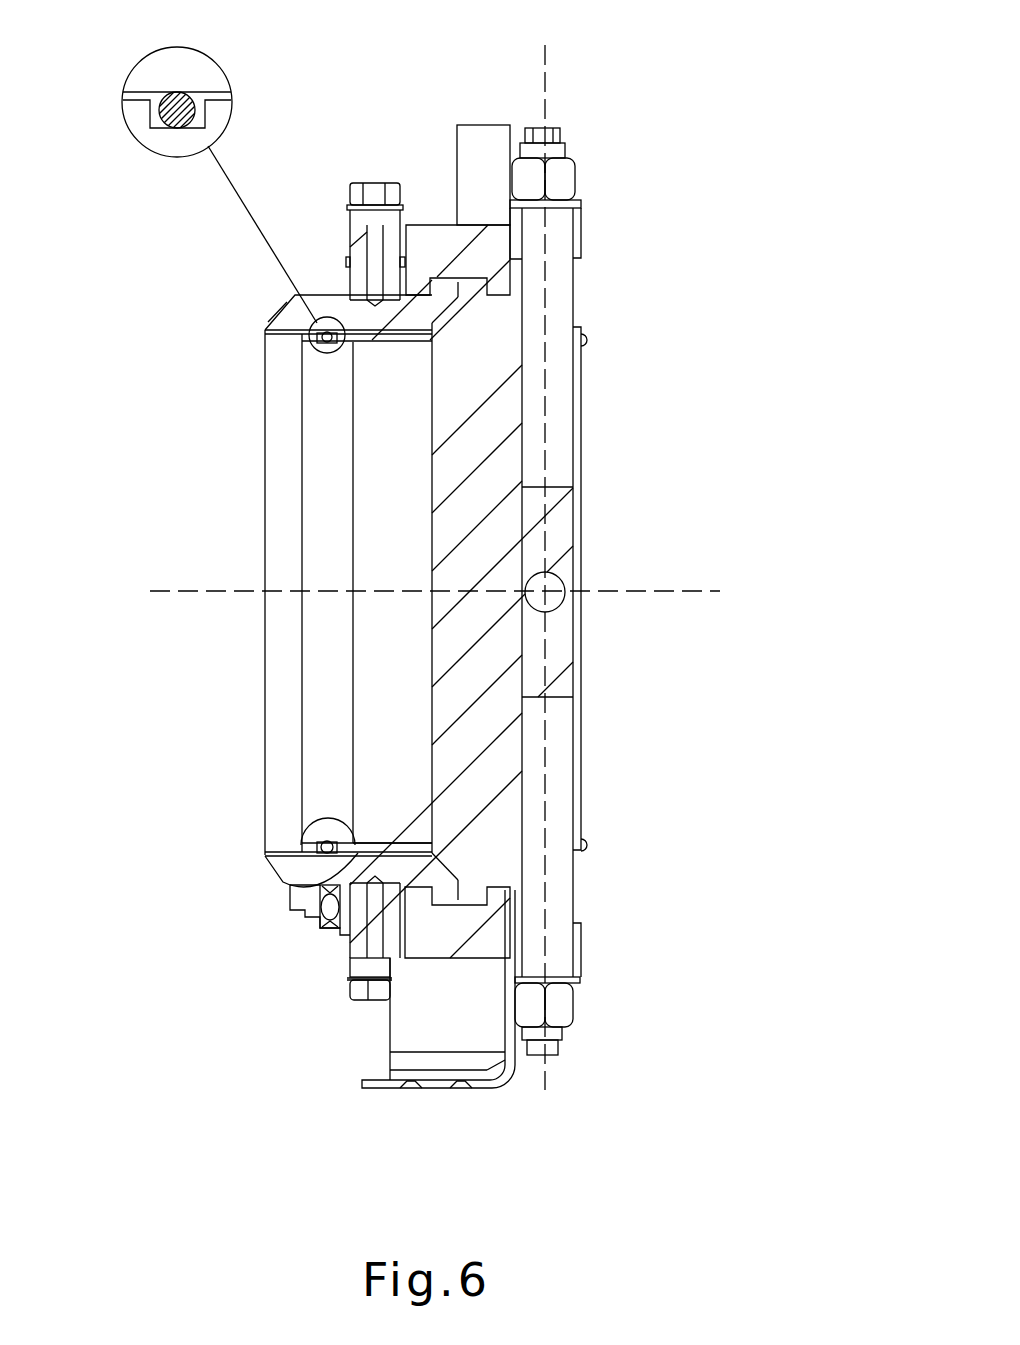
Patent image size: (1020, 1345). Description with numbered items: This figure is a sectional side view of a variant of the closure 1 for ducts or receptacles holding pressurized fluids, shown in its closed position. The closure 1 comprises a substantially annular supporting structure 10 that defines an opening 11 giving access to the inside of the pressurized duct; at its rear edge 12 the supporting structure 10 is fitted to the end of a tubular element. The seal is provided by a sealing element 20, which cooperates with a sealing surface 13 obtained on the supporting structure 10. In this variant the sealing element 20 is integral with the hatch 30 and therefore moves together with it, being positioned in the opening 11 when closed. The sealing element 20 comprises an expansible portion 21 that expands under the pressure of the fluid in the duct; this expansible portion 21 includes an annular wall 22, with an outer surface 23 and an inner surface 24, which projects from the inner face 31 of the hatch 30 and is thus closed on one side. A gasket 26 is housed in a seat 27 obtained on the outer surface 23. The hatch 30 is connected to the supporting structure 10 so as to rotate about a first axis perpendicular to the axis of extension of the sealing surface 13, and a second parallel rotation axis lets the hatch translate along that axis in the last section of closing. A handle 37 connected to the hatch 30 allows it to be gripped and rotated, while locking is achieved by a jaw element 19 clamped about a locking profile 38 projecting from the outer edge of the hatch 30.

The closure 1 is at (737, 121).
The supporting structure 10 is at (358, 313).
The opening 11 is at (349, 634).
The rear edge 12 is at (275, 305).
The sealing surface 13 is at (229, 98).
The jaw element 19 is at (432, 247).
The sealing element 20 is at (377, 537).
The expansible portion 21 is at (388, 842).
The annular wall 22 is at (367, 342).
The outer surface 23 is at (213, 92).
The inner surface 24 is at (405, 342).
The gasket 26 is at (177, 115).
The seat 27 is at (155, 107).
The hatch 30 is at (484, 437).
The inner face 31 is at (432, 687).
The handle 37 is at (553, 877).
The locking profile 38 is at (473, 290).